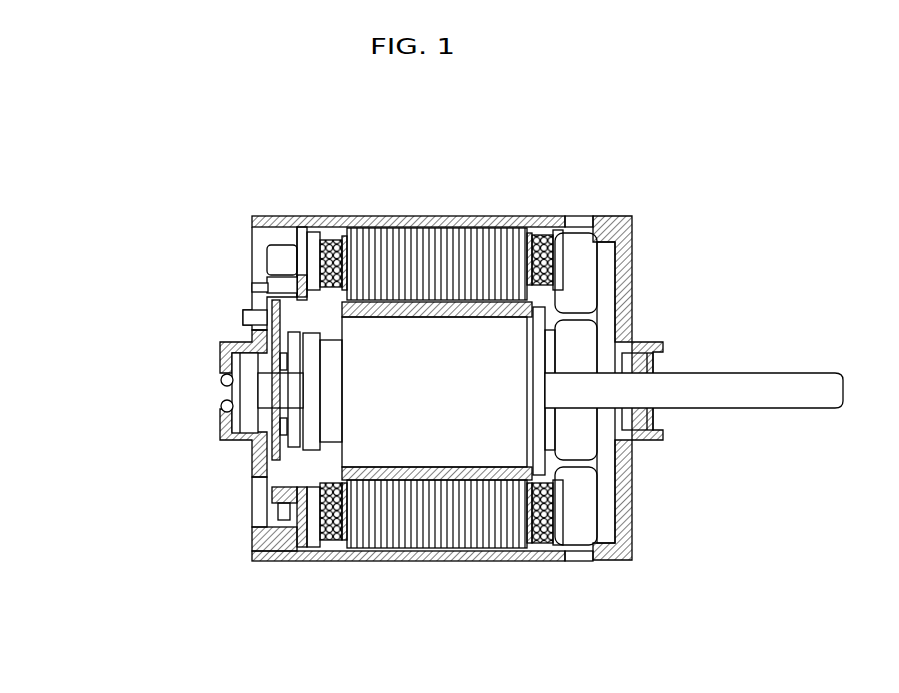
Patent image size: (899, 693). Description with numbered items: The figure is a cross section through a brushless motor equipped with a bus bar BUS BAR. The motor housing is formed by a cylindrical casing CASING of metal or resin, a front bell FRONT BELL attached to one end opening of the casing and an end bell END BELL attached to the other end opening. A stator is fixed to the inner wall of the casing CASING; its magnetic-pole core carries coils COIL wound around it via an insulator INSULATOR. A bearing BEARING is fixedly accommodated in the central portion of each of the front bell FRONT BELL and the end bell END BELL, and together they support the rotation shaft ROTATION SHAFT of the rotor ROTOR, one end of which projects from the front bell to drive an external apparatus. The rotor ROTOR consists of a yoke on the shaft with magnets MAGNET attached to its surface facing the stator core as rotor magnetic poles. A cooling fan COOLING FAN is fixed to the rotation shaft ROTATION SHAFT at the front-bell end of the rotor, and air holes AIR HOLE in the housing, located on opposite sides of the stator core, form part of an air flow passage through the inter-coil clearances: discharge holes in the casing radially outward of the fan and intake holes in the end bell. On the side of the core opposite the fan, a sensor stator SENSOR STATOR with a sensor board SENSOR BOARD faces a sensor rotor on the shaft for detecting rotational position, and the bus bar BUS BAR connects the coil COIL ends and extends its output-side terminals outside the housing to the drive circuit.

The cylindrical casing CASING is at (493, 549).
The air hole AIR HOLE is at (258, 507).
The front bell FRONT BELL is at (632, 484).
The end bell END BELL is at (258, 245).
The bearing BEARING is at (237, 417).
The cooling fan COOLING FAN is at (577, 500).
The rotor ROTOR is at (405, 340).
The magnet MAGNET is at (412, 541).
The insulator INSULATOR is at (552, 265).
The coil COIL is at (323, 541).
The rotation shaft ROTATION SHAFT is at (733, 390).
The bus bar BUS BAR is at (300, 273).
The sensor stator SENSOR STATOR is at (74, 410).
The sensor board SENSOR BOARD is at (272, 318).